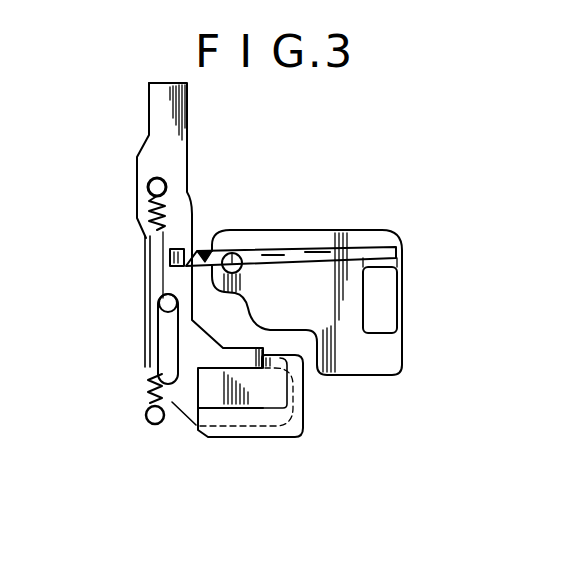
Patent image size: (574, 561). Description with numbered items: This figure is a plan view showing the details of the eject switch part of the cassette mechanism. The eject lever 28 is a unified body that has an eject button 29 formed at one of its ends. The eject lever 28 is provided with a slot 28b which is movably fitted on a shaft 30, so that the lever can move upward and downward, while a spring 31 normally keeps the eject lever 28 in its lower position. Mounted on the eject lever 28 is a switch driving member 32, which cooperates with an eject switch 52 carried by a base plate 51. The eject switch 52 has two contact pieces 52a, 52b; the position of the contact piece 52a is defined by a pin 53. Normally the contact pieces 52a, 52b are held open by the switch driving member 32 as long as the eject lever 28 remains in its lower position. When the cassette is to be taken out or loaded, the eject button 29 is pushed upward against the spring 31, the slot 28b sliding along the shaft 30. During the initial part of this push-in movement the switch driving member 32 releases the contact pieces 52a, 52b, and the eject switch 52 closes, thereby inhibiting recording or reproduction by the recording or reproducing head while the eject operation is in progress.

The eject lever 28 is at (155, 125).
The slot 28b is at (170, 350).
The eject button 29 is at (247, 430).
The shaft 30 is at (165, 304).
The spring 31 is at (150, 391).
The switch driving member 32 is at (171, 256).
The base plate 51 is at (380, 363).
The eject switch 52 is at (330, 221).
The contact piece 52a is at (315, 248).
The contact piece 52b is at (270, 258).
The pin 53 is at (232, 253).